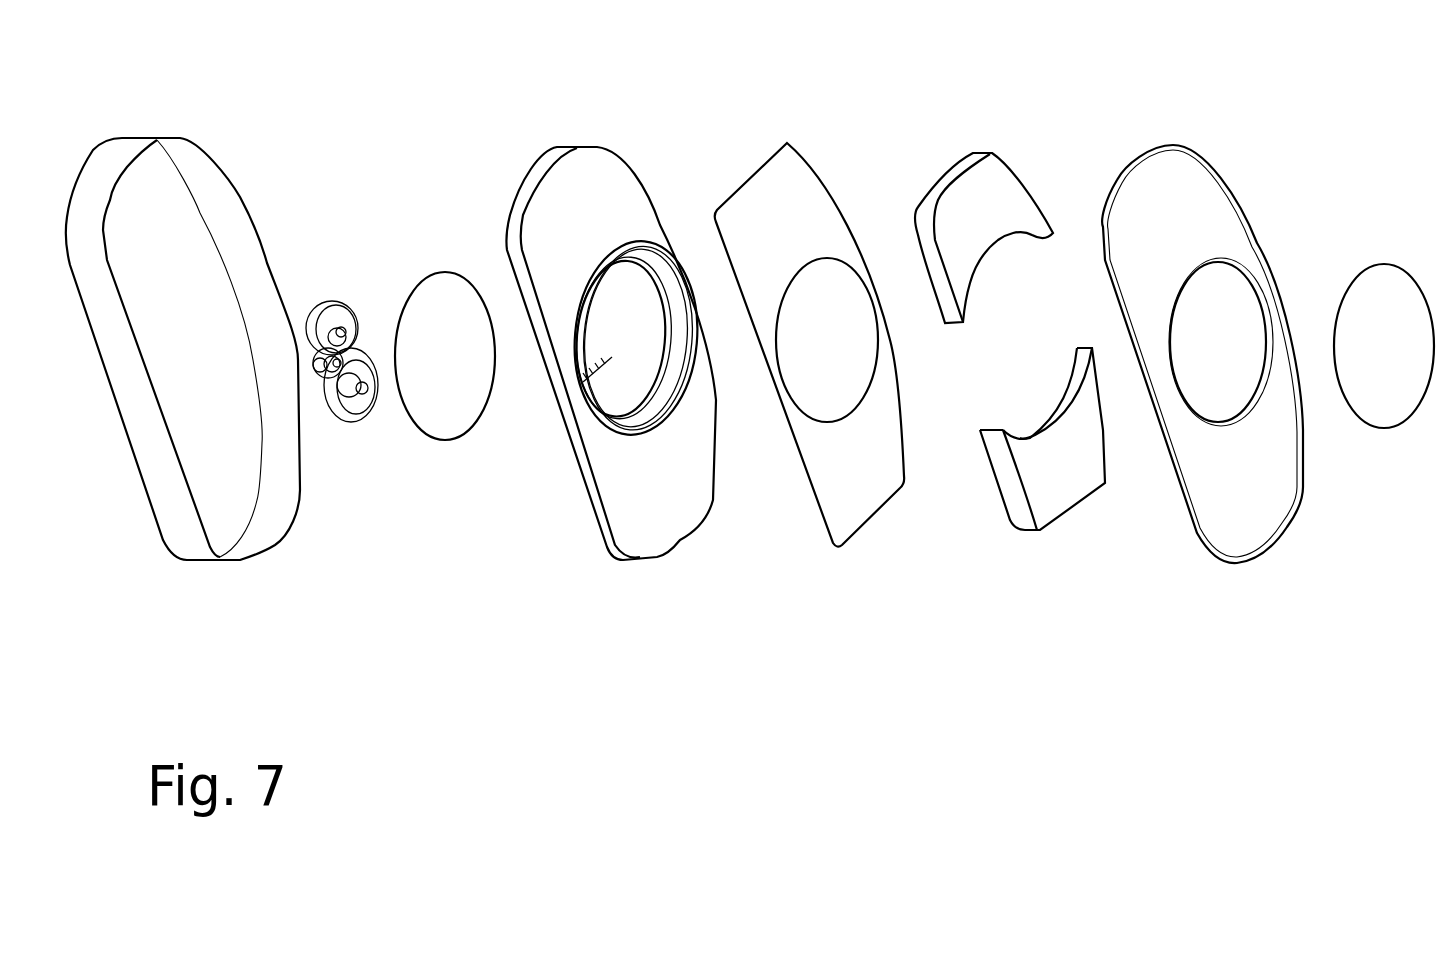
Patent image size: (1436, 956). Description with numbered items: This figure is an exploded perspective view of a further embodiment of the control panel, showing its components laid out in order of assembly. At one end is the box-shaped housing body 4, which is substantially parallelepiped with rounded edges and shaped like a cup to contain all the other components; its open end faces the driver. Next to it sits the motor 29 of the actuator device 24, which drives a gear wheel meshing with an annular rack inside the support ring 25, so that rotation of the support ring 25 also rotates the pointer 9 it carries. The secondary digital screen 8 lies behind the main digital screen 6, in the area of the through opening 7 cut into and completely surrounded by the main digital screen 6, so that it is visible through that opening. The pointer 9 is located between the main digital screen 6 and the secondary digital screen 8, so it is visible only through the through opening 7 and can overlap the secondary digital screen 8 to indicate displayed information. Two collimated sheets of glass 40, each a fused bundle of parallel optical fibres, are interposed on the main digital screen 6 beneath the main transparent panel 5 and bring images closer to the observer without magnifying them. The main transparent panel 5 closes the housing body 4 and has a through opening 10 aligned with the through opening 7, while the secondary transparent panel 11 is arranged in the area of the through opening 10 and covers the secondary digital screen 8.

The housing body 4 is at (233, 505).
The motor 29 is at (340, 285).
The secondary digital screen 8 is at (435, 355).
The actuator device 24 is at (611, 420).
The support ring 25 is at (638, 418).
The pointer 9 is at (603, 355).
The main digital screen 6 is at (809, 347).
The through opening 7 is at (819, 275).
The collimated sheet of glass 40 is at (970, 213).
The main transparent panel 5 is at (1202, 341).
The through opening 10 is at (1214, 280).
The secondary transparent panel 11 is at (1380, 323).